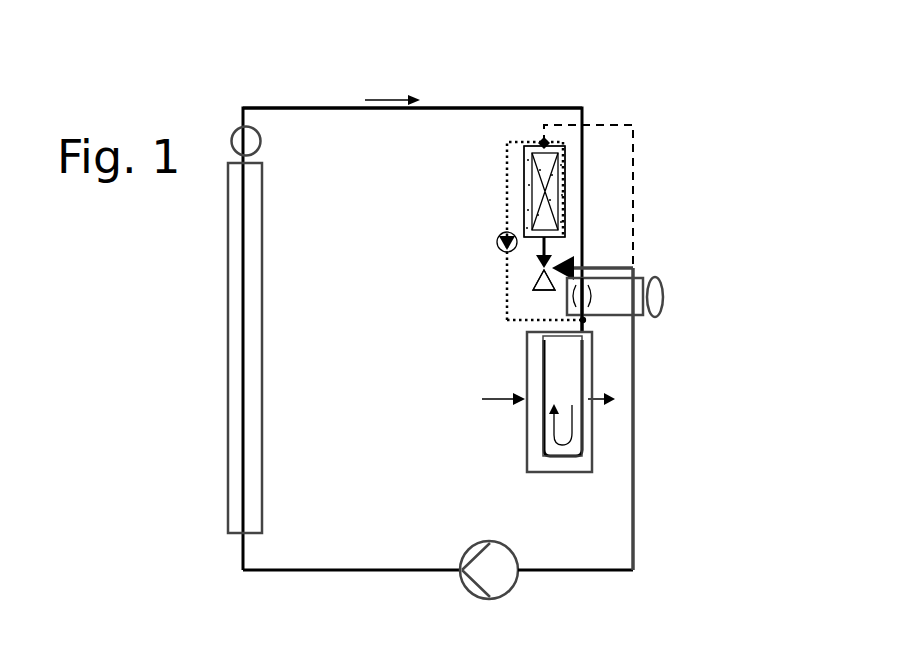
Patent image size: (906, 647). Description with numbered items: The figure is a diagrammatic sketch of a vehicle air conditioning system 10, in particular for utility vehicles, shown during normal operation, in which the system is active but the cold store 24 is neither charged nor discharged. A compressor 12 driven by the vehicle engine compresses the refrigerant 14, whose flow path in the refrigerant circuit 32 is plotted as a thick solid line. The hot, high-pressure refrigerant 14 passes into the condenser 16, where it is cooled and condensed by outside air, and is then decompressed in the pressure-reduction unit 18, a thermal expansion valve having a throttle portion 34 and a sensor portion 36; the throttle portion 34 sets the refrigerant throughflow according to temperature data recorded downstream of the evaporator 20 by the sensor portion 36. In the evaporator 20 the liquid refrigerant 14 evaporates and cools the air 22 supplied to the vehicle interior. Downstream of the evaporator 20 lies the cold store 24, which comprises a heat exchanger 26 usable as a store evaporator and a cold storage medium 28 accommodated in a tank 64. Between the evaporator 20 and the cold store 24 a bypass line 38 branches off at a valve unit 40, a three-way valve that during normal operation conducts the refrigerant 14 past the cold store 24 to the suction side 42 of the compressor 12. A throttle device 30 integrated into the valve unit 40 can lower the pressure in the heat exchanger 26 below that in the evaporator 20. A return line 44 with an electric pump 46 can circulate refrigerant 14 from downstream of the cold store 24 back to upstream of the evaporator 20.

The vehicle air conditioning system 10 is at (690, 78).
The compressor 12 is at (500, 580).
The refrigerant 14 is at (390, 100).
The condenser 16 is at (233, 364).
The pressure-reduction unit 18 is at (660, 262).
The evaporator 20 is at (530, 440).
The air 22 is at (500, 402).
The cold store 24 is at (572, 134).
The heat exchanger 26 is at (524, 210).
The cold storage medium 28 is at (524, 162).
The throttle device 30 is at (538, 270).
The refrigerant circuit 32 is at (306, 92).
The throttle portion 34 is at (590, 302).
The sensor portion 36 is at (658, 298).
The bypass line 38 is at (604, 263).
The valve unit 40 is at (520, 290).
The suction side 42 is at (520, 568).
The return line 44 is at (507, 316).
The electric pump 46 is at (497, 242).
The tank 64 is at (524, 186).